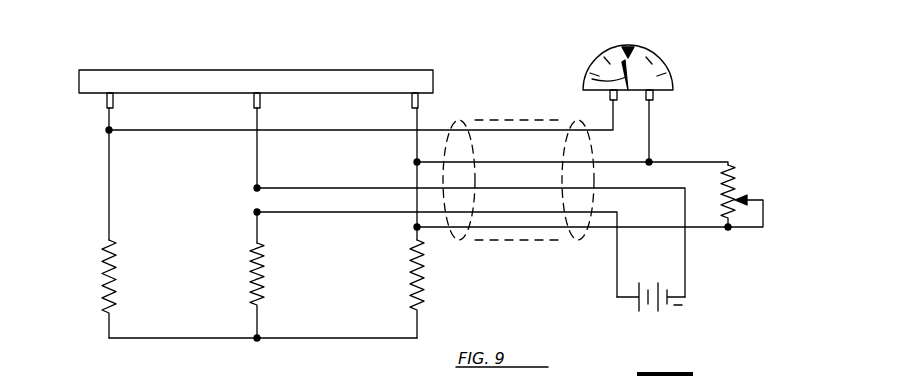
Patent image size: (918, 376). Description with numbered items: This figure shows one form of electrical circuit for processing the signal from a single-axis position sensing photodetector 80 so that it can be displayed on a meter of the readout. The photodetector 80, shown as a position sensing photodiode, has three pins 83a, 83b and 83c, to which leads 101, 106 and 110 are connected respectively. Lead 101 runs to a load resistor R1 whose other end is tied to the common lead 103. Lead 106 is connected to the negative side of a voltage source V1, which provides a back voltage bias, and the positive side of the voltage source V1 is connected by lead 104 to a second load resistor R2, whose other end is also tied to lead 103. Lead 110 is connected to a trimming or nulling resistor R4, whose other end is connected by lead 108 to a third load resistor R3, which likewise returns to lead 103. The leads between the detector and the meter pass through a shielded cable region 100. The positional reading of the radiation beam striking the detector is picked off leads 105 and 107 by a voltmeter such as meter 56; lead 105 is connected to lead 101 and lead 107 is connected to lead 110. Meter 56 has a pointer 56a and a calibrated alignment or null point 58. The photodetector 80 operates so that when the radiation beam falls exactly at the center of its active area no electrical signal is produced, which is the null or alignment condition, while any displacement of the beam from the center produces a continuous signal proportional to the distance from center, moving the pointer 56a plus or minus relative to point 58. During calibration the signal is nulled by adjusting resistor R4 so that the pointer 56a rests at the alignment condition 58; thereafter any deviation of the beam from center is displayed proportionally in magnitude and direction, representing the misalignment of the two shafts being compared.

The photodetector 80 is at (432, 78).
The pin 83a is at (106, 101).
The pin 83b is at (252, 100).
The pin 83c is at (410, 104).
The lead 101 is at (108, 197).
The lead 105 is at (612, 114).
The lead 106 is at (350, 186).
The lead 104 is at (305, 213).
The lead 110 is at (511, 162).
The lead 107 is at (651, 124).
The lead 103 is at (335, 338).
The shielded cable 100 is at (504, 120).
The lead 108 is at (518, 240).
The meter 56 is at (664, 62).
The meter pointer 56a is at (592, 79).
The alignment condition point 58 is at (632, 47).
The load resistor R1 is at (125, 289).
The load resistor R2 is at (275, 290).
The load resistor R3 is at (433, 289).
The trimming or nulling resistor R4 is at (594, 197).
The voltage source V1 is at (651, 309).